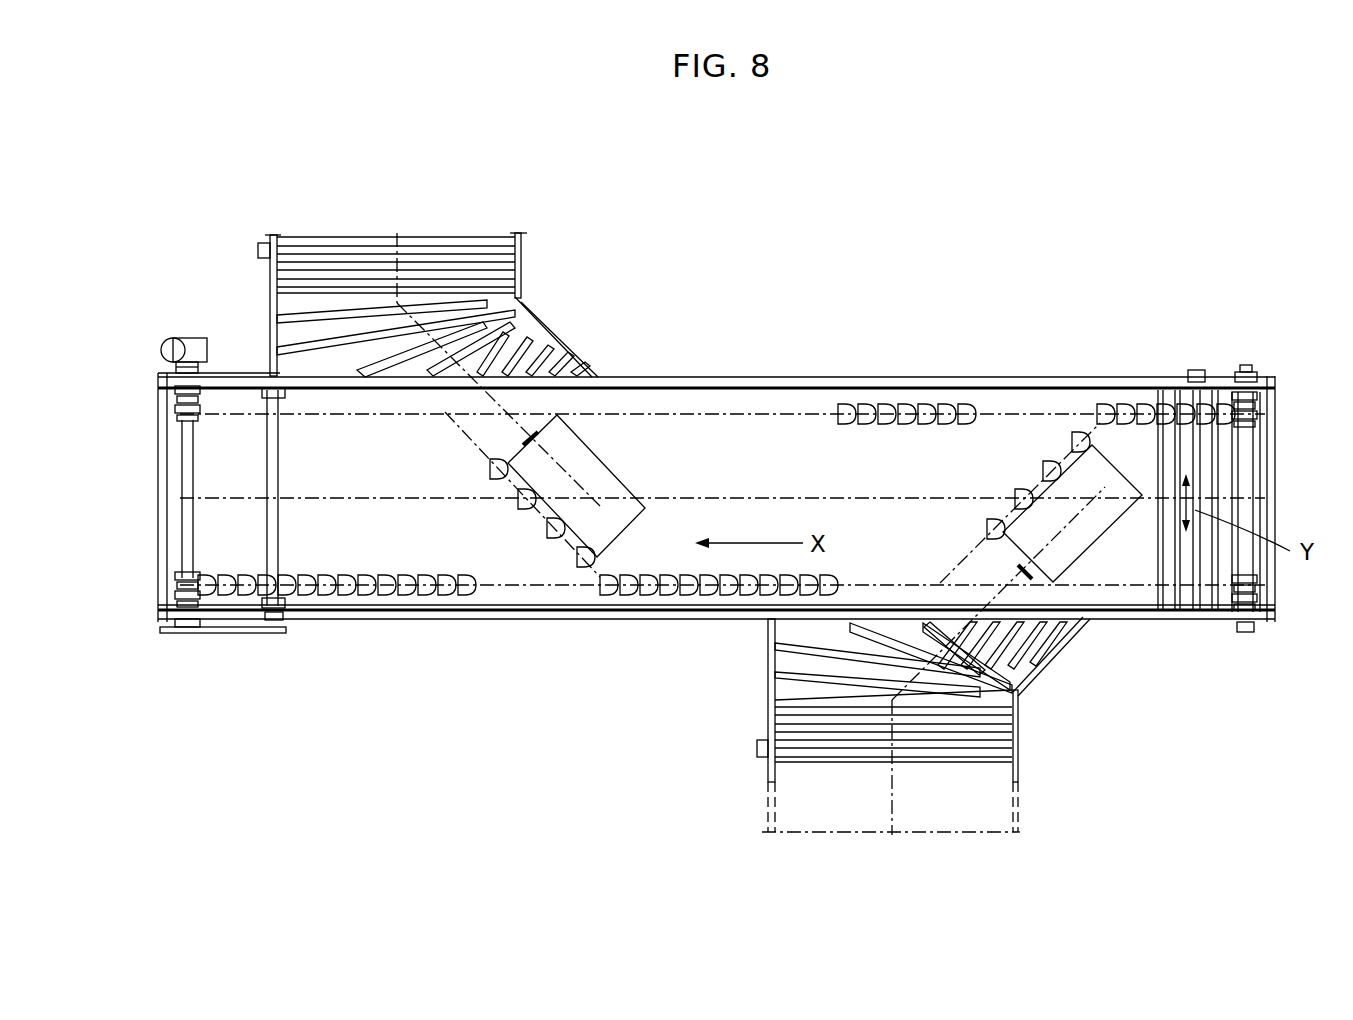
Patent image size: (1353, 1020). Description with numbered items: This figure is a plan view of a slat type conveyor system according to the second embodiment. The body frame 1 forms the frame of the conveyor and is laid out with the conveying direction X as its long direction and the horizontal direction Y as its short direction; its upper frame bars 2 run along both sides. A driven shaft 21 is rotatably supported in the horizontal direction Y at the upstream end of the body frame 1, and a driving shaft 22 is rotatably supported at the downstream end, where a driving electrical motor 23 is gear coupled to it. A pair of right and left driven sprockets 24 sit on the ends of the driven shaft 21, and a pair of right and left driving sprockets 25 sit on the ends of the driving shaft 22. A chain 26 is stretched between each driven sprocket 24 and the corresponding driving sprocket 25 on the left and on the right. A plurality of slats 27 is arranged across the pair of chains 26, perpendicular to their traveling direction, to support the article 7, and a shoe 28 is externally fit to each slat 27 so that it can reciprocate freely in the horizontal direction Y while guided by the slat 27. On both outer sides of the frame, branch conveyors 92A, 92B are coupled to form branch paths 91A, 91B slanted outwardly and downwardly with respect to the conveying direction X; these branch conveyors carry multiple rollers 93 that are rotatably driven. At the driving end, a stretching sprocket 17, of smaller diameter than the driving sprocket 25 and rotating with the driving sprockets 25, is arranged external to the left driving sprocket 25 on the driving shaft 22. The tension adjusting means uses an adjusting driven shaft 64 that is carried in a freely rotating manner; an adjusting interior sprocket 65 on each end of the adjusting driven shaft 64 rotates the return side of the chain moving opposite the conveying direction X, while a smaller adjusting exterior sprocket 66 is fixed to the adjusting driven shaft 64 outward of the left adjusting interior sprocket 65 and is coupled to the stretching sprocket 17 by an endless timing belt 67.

The body frame 1 is at (1264, 632).
The upper frame bars 2 is at (988, 380).
The article 7 is at (583, 472).
The stretching sprocket 17 is at (184, 640).
The driven shaft 21 is at (1253, 482).
The driving shaft 22 is at (182, 487).
The driving electrical motor 23 is at (207, 330).
The driven sprockets 24 is at (1258, 398).
The driving sprockets 25 is at (170, 393).
The chain 26 is at (760, 378).
The slats 27 is at (1172, 597).
The shoe 28 is at (1141, 403).
The adjusting driven shaft 64 is at (280, 515).
The adjusting interior sprocket 65 is at (282, 398).
The adjusting exterior sprocket 66 is at (282, 640).
The timing belt 67 is at (240, 634).
The branch path 91A is at (893, 782).
The branch path 91B is at (397, 267).
The branch conveyor 92A is at (1028, 750).
The branch conveyor 92B is at (532, 268).
The rollers 93 is at (318, 258).